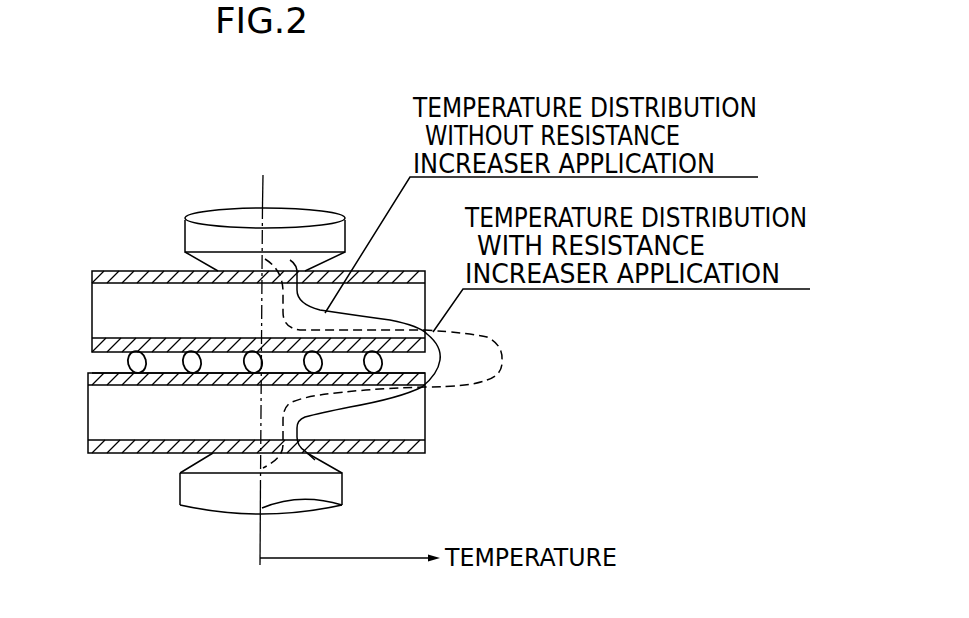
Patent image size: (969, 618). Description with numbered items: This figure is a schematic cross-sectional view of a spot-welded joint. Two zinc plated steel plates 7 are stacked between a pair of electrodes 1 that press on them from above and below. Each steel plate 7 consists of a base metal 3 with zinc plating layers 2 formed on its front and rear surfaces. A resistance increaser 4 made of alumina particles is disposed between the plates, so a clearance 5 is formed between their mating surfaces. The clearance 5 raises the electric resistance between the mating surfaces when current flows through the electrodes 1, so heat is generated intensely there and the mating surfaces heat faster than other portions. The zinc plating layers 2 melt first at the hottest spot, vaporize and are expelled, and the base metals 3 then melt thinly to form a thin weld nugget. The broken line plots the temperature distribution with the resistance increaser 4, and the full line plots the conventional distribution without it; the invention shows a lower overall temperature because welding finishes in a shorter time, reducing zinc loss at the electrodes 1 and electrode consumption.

The electrode 1 is at (333, 232).
The zinc plating layer 2 is at (409, 277).
The base metal 3 is at (412, 296).
The resistance increaser 4 is at (127, 362).
The clearance 5 is at (92, 369).
The steel plate 7 is at (250, 365).